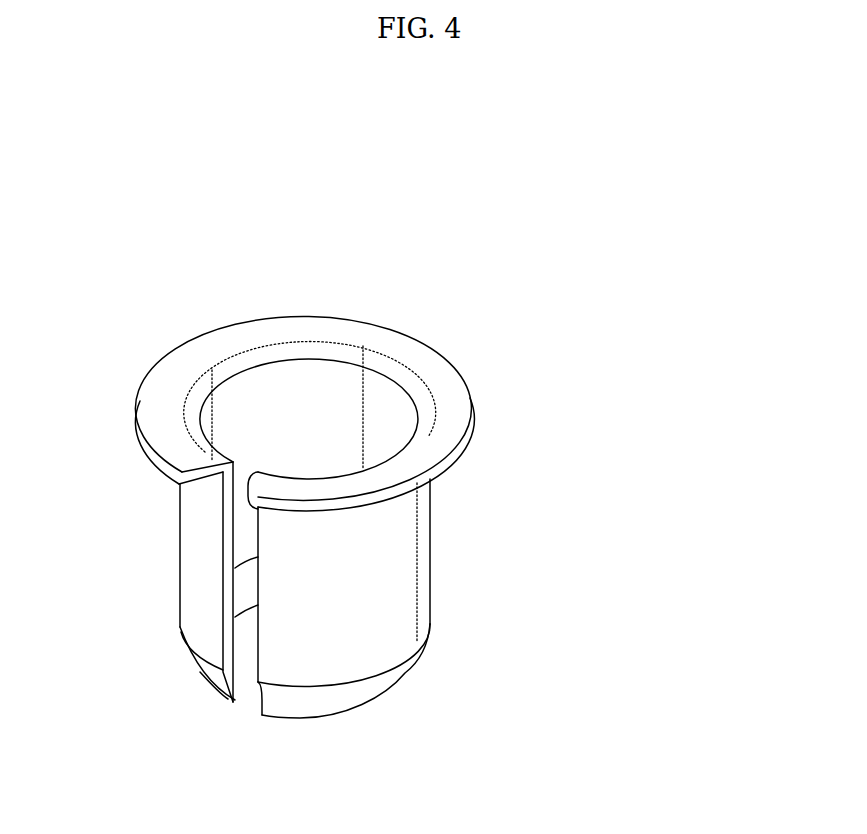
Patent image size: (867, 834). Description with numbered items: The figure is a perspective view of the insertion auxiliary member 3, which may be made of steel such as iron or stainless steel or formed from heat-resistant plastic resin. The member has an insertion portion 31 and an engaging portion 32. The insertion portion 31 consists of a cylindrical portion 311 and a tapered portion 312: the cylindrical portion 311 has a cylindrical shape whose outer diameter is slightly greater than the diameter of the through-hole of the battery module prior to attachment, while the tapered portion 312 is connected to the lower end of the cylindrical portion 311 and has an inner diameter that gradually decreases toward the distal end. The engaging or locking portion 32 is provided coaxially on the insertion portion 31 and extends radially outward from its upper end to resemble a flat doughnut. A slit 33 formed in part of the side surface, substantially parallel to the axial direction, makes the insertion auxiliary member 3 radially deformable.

The insertion auxiliary member 3 is at (506, 290).
The insertion portion 31 is at (553, 523).
The cylindrical portion 311 is at (393, 547).
The tapered portion 312 is at (398, 695).
The engaging portion 32 is at (455, 393).
The slit 33 is at (240, 652).